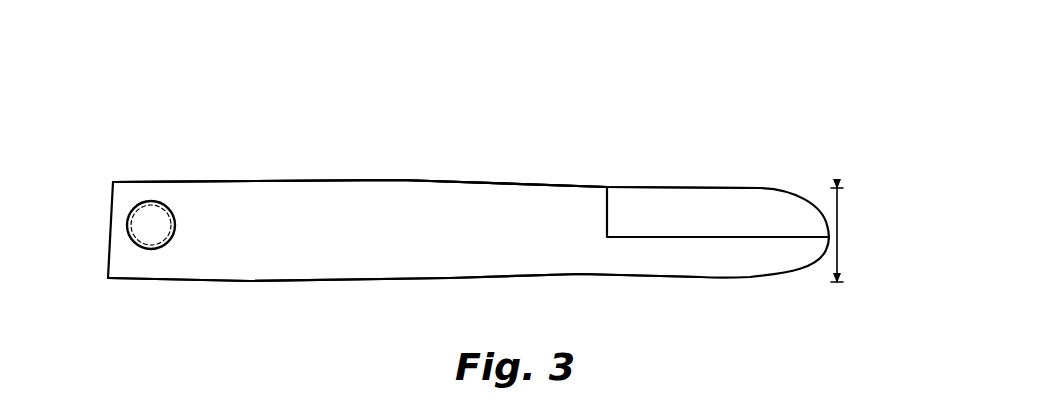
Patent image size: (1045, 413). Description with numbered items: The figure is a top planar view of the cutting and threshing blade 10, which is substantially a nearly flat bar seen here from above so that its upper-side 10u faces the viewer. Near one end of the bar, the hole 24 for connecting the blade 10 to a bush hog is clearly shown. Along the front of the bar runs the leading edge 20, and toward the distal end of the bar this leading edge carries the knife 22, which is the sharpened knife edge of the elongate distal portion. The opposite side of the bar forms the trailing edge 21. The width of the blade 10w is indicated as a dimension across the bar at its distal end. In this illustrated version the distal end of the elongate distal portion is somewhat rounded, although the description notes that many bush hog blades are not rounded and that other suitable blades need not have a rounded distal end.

The cutting and threshing blade 10 is at (642, 145).
The upper-side 10u is at (443, 213).
The width 10w is at (840, 226).
The leading edge 20 is at (325, 178).
The trailing edge 21 is at (353, 287).
The knife edge 22 is at (728, 200).
The hole 24 is at (145, 212).